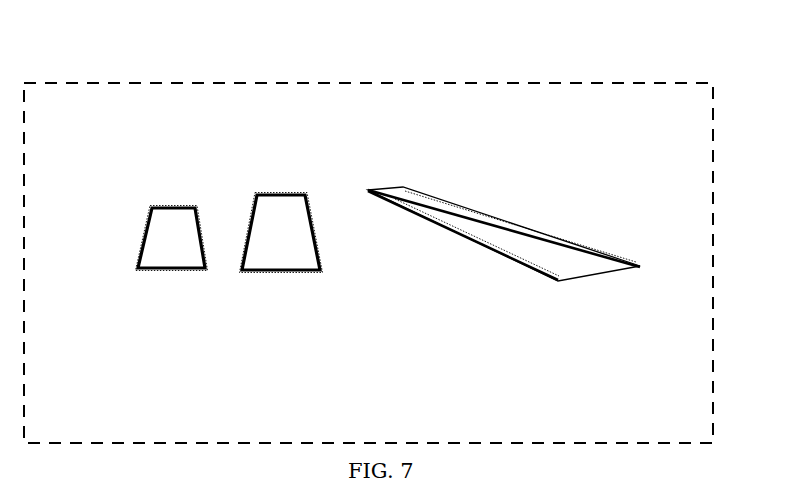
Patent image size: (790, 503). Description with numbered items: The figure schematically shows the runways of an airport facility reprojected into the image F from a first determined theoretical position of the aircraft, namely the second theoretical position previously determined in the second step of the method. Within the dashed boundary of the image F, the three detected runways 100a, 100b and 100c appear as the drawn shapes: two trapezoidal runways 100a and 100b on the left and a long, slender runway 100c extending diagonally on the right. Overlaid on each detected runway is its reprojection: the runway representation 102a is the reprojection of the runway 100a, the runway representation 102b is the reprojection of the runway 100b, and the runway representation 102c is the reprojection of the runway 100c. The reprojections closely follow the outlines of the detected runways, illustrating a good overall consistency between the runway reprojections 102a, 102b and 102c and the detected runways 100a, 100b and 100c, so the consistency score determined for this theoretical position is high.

The image F is at (490, 83).
The runway 100a is at (160, 268).
The runway 100b is at (272, 272).
The runway 100c is at (530, 257).
The runway representation 102a is at (170, 203).
The runway representation 102b is at (280, 195).
The runway representation 102c is at (495, 217).